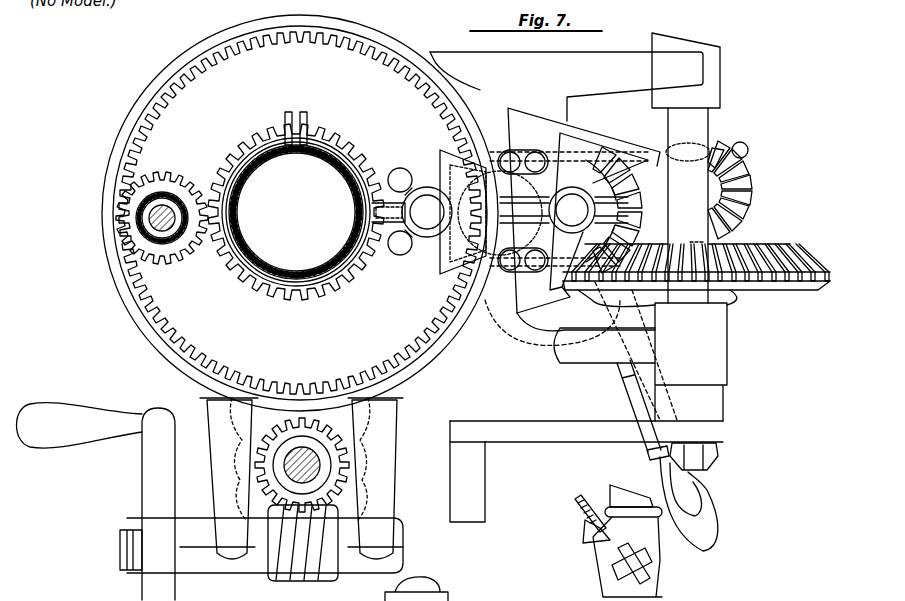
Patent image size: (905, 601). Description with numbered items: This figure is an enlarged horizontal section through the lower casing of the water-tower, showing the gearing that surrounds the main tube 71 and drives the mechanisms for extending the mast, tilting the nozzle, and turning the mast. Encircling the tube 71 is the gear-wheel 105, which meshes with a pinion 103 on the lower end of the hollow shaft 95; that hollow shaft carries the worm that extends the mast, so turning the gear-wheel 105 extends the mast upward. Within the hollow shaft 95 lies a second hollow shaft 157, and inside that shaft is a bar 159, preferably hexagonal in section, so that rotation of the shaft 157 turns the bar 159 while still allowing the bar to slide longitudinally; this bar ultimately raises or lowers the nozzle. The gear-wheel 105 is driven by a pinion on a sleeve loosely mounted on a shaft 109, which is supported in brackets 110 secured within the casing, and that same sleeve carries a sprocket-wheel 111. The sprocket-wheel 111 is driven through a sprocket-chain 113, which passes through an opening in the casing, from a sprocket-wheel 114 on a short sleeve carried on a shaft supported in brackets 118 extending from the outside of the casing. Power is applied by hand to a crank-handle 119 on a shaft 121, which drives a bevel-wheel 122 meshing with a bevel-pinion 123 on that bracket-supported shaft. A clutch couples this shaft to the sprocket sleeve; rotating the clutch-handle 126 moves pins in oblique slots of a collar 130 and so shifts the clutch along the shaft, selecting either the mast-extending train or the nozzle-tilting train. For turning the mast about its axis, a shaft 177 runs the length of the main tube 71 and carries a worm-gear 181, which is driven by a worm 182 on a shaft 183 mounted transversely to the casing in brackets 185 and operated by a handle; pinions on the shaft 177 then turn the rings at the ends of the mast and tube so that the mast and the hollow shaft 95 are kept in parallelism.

The hollow shaft 95 is at (180, 258).
The gear-wheel 105 is at (232, 157).
The main tube 71 is at (323, 270).
The pinion 103 is at (180, 183).
The hollow shaft 157 is at (176, 198).
The bar 159 is at (164, 244).
The shaft 109 is at (412, 212).
The brackets 110 is at (445, 168).
The sprocket-wheel 111 is at (412, 256).
The sprocket-chain 113 is at (428, 258).
The brackets 118 is at (540, 305).
The collar 130 is at (606, 193).
The shaft 121 is at (708, 132).
The sprocket-wheel 114 is at (748, 165).
The bevel-pinion 123 is at (752, 190).
The bevel-wheel 122 is at (782, 256).
The crank-handle 119 is at (537, 443).
The clutch-handle 126 is at (718, 515).
The brackets 185 is at (397, 419).
The worm-gear 181 is at (272, 476).
The shaft 177 is at (240, 445).
The worm 182 is at (310, 575).
The shaft 183 is at (403, 533).